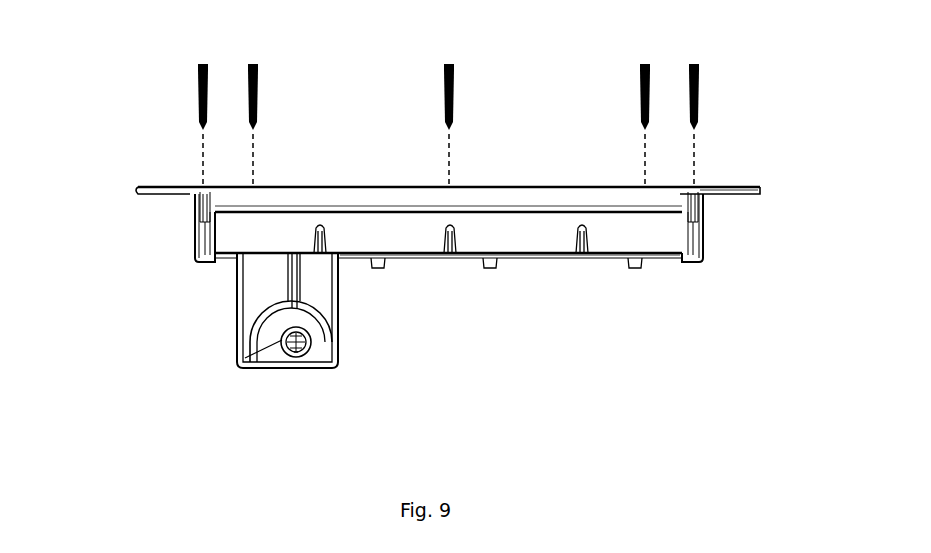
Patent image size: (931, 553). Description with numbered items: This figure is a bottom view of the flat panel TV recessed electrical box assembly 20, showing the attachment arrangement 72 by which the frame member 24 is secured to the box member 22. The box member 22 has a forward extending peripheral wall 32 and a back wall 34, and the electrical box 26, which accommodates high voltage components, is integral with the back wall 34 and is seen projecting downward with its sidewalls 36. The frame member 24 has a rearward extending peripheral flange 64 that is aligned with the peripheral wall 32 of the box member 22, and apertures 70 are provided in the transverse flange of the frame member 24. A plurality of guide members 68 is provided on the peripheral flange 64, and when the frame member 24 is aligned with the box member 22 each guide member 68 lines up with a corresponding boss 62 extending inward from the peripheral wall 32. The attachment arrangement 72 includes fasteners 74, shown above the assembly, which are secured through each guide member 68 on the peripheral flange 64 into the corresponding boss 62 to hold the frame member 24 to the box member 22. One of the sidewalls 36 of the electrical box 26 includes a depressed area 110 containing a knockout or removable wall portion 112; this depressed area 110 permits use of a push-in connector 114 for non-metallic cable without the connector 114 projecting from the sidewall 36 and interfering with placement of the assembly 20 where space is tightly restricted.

The electrical box assembly 20 is at (125, 158).
The box member 22 is at (705, 232).
The frame member 24 is at (712, 202).
The electrical box 26 is at (238, 312).
The peripheral wall 32 is at (509, 242).
The back wall 34 is at (445, 256).
The sidewalls 36 is at (256, 290).
The bosses 62 is at (216, 240).
The peripheral flange 64 is at (480, 200).
The guide members 68 is at (203, 187).
The apertures 70 is at (736, 187).
The attachment arrangement 72 is at (172, 70).
The fasteners 74 is at (258, 92).
The depressed area 110 is at (322, 341).
The removable wall portion 112 is at (238, 366).
The push-in connector 114 is at (294, 356).